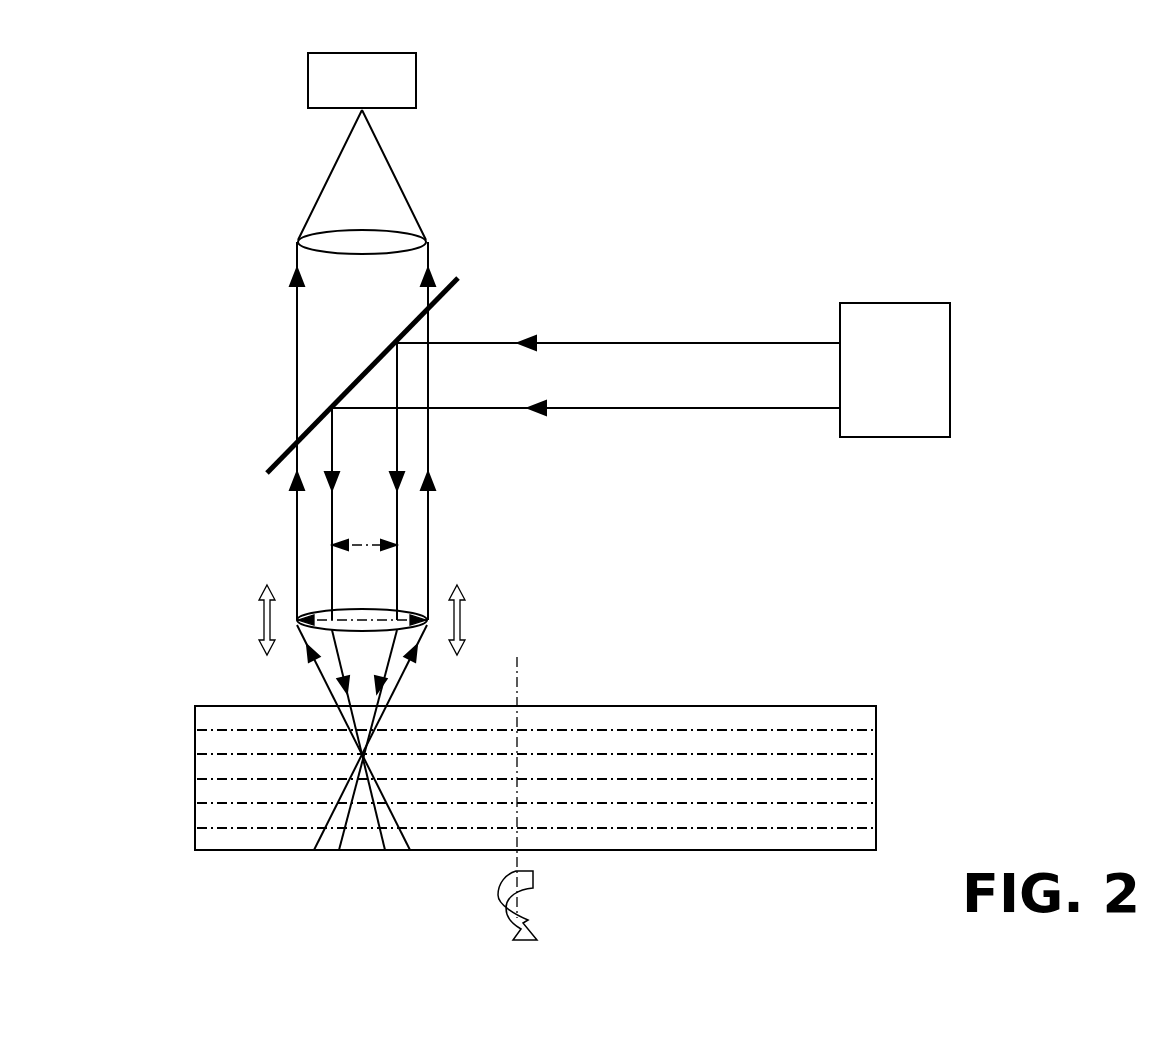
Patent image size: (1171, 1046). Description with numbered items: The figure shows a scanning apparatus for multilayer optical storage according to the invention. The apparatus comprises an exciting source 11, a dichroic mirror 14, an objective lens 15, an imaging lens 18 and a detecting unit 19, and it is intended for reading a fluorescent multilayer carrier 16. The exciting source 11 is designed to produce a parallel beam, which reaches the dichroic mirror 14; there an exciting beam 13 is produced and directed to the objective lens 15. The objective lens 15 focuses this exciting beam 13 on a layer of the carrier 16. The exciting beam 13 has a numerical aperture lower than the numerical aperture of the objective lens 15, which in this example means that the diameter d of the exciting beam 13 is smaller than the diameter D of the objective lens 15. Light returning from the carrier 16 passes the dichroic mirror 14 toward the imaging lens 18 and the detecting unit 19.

The exciting source 11 is at (923, 303).
The exciting beam 13 is at (397, 437).
The dichroic mirror 14 is at (281, 460).
The objective lens 15 is at (427, 622).
The fluorescent multilayer carrier 16 is at (876, 788).
The imaging lens 18 is at (395, 241).
The detecting unit 19 is at (416, 78).